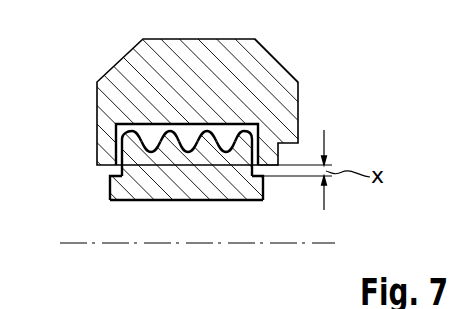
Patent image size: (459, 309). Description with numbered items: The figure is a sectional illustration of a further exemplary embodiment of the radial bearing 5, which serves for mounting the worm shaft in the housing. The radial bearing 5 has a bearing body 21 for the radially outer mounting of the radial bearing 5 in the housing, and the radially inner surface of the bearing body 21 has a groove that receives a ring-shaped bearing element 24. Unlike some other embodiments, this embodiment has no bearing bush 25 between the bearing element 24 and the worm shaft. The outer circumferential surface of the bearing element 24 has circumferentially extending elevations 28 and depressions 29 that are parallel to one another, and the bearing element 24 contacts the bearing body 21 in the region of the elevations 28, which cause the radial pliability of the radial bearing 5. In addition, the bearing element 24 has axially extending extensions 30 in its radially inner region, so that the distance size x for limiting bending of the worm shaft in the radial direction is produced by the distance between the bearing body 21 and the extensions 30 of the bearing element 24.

The radial bearing 5 is at (330, 82).
The bearing body 21 is at (277, 78).
The bearing element 24 is at (215, 146).
The bearing bush 25 is at (249, 190).
The elevations 28 is at (166, 128).
The depressions 29 is at (151, 155).
The extensions 30 is at (127, 187).